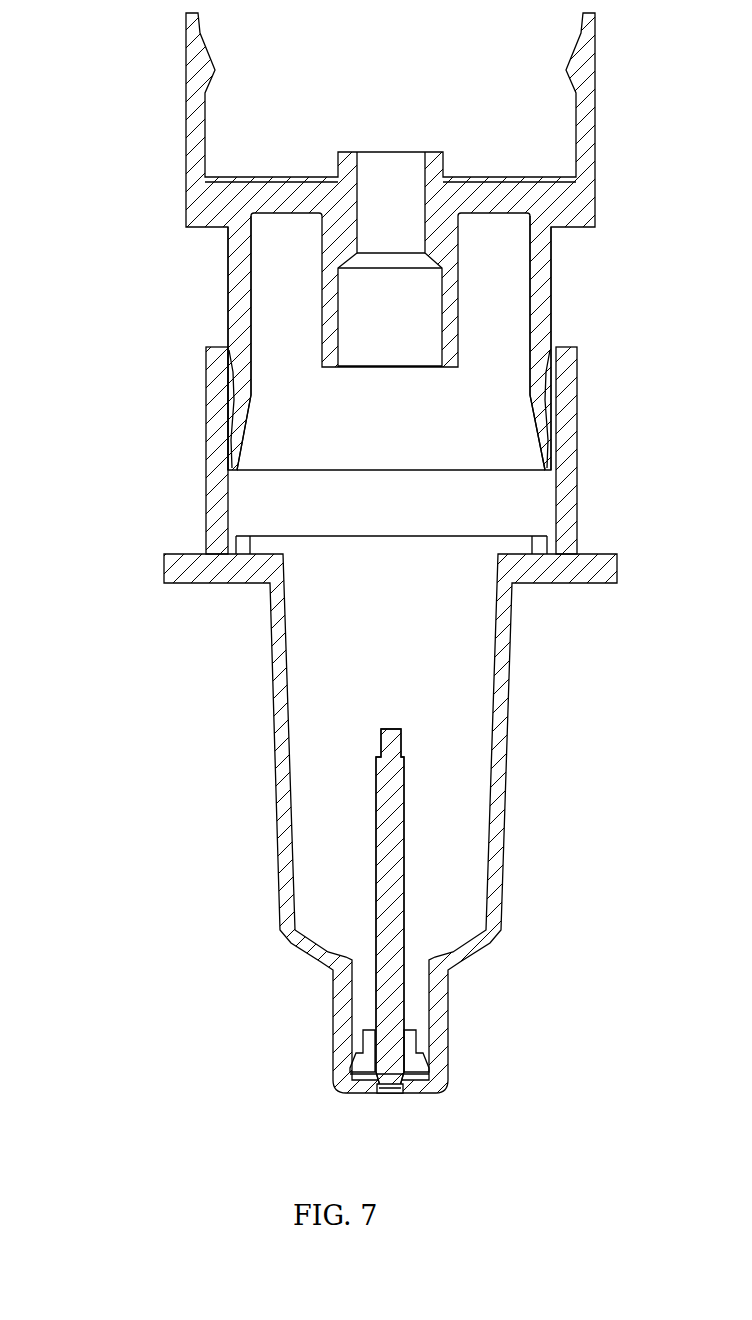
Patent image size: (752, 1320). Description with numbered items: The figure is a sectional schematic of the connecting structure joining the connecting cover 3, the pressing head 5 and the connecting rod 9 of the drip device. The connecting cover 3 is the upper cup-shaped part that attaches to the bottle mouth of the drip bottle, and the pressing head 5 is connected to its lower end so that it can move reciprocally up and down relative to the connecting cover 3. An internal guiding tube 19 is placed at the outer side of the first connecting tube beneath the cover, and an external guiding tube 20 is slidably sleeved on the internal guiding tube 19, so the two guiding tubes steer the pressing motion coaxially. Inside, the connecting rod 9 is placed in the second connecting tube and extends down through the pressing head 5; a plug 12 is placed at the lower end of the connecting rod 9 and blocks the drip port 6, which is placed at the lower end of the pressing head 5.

The connecting cover 3 is at (187, 175).
The internal guiding tube 19 is at (228, 282).
The external guiding tube 20 is at (217, 468).
The pressing head 5 is at (278, 800).
The connecting rod 9 is at (407, 898).
The plug 12 is at (430, 1050).
The drip port 6 is at (393, 1094).